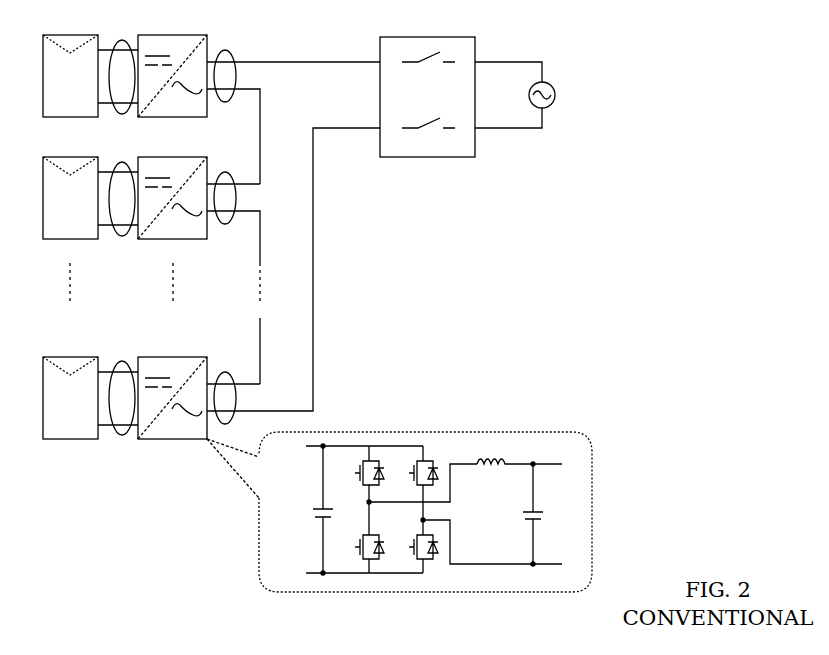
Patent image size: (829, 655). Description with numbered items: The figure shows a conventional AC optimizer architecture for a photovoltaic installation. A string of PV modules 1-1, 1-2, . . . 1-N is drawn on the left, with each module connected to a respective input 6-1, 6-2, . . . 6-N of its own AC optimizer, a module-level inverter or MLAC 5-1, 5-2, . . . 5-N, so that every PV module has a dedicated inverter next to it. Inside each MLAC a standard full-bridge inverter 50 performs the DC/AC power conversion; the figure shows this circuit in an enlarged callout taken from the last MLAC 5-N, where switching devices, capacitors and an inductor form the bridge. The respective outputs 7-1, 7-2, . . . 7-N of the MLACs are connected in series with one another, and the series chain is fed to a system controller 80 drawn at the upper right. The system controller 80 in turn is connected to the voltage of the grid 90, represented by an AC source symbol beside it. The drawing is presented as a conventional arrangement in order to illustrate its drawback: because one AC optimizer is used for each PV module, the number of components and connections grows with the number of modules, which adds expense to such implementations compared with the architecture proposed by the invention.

The PV module 1-1 is at (43, 77).
The PV module 1-2 is at (43, 199).
The PV module 1-N is at (43, 398).
The input 6-1 is at (119, 43).
The input 6-2 is at (119, 165).
The input 6-N is at (119, 364).
The module-level inverter (MLAC) 5-1 is at (207, 105).
The module-level inverter (MLAC) 5-2 is at (207, 227).
The module-level inverter (MLAC) 5-N is at (207, 425).
The output 7-1 is at (231, 55).
The output 7-2 is at (231, 178).
The output 7-N is at (231, 376).
The full-bridge inverter 50 is at (403, 432).
The system controller 80 is at (475, 145).
The grid 90 is at (553, 87).